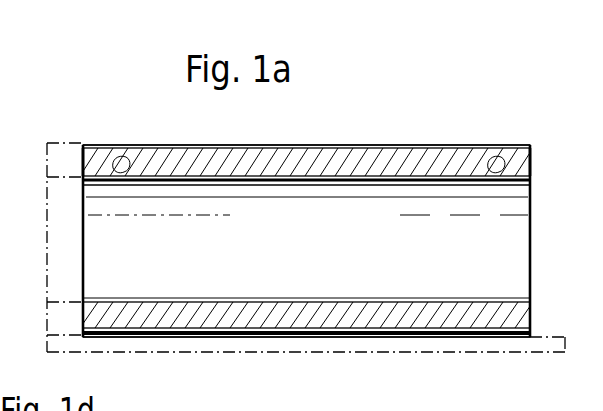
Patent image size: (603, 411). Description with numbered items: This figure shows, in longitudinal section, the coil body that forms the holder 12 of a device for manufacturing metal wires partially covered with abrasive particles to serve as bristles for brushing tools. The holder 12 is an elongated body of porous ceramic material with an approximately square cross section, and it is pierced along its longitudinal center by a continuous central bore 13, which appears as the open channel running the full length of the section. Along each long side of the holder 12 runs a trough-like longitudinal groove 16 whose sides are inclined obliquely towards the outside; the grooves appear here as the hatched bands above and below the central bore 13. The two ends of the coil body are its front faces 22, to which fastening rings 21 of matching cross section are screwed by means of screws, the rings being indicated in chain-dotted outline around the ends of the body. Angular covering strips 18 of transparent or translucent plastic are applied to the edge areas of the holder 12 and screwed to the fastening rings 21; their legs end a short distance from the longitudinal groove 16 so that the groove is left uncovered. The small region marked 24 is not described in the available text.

The holder 12 is at (396, 141).
The central bore 13 is at (507, 278).
The longitudinal groove 16 is at (318, 146).
The covering strip 18 is at (393, 350).
The fastening ring 21 is at (52, 167).
The front face 22 is at (85, 162).
The insert 24 is at (118, 152).